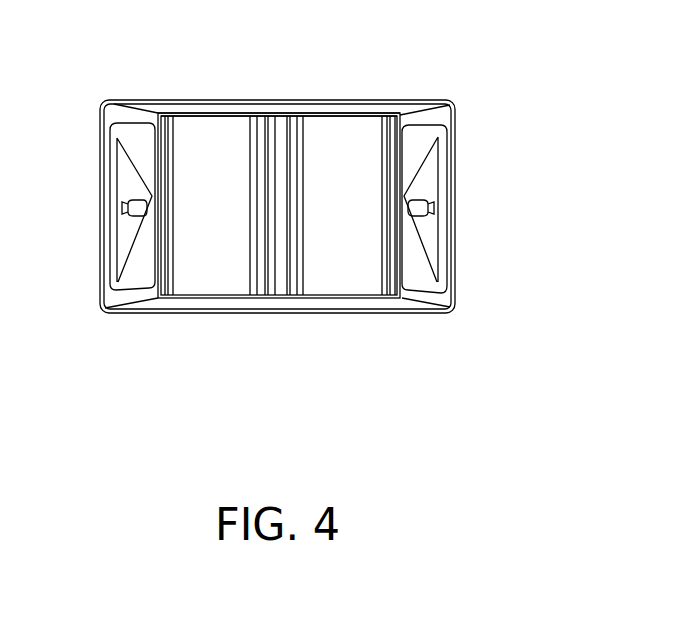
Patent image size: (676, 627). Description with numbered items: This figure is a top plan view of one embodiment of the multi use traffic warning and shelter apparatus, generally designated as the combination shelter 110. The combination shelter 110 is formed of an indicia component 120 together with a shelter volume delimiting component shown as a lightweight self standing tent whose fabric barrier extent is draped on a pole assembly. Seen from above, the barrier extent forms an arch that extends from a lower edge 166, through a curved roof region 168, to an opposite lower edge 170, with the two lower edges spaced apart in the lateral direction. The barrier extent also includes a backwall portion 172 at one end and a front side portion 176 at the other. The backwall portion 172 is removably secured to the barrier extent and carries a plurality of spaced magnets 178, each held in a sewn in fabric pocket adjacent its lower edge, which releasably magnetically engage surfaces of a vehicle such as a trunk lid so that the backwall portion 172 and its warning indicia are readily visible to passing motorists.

The combination shelter 110 is at (478, 162).
The indicia component 120 is at (428, 175).
The lower edge 166 is at (457, 300).
The curved roof region 168 is at (315, 262).
The opposite lower edge 170 is at (102, 305).
The backwall portion 172 is at (225, 112).
The front side portion 176 is at (208, 305).
The magnets 178 is at (162, 100).